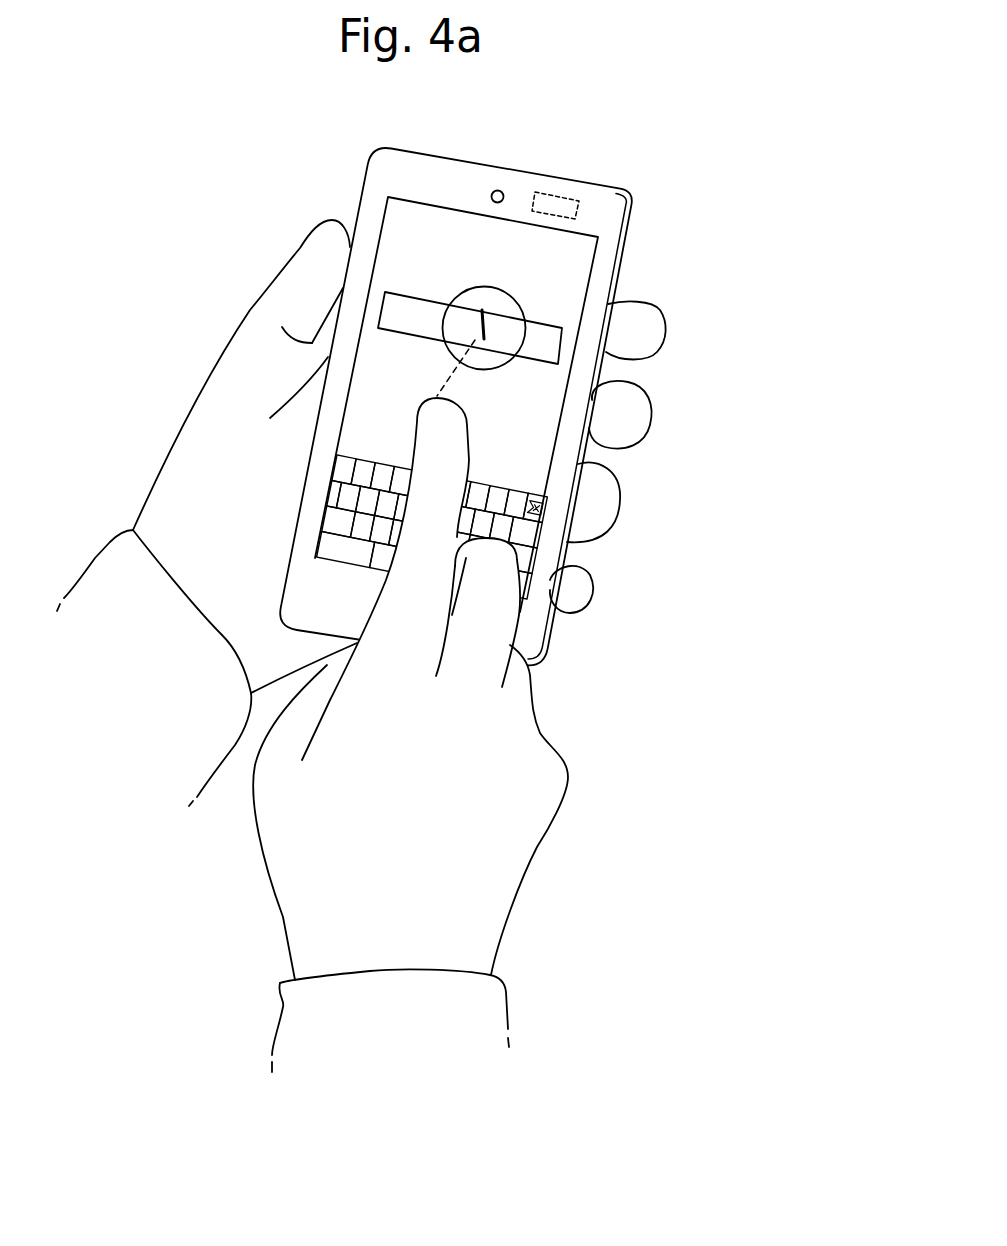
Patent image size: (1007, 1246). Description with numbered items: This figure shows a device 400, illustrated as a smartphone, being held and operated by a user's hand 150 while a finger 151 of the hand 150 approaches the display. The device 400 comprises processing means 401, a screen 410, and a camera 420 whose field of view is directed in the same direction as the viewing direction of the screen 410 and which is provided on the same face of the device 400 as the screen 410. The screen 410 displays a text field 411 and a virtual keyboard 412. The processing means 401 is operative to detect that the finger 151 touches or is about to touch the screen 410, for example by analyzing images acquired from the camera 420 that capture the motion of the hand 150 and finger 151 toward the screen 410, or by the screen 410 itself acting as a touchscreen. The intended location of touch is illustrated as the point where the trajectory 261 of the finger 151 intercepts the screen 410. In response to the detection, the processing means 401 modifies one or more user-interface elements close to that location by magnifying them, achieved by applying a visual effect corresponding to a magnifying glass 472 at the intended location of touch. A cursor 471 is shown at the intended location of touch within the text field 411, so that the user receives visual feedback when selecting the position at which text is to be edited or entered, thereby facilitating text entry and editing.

The device 400 is at (624, 190).
The processing means 401 is at (566, 198).
The screen 410 is at (562, 247).
The text field 411 is at (560, 334).
The virtual keyboard 412 is at (518, 484).
The camera 420 is at (493, 191).
The trajectory 261 is at (465, 357).
The cursor 471 is at (482, 317).
The magnifying glass 472 is at (500, 286).
The hand 150 is at (497, 835).
The finger 151 is at (443, 507).